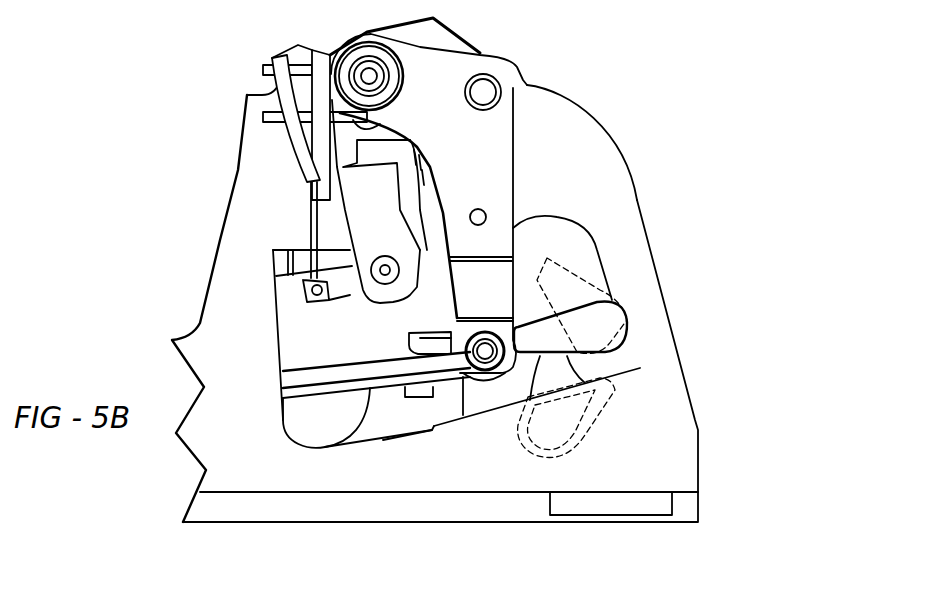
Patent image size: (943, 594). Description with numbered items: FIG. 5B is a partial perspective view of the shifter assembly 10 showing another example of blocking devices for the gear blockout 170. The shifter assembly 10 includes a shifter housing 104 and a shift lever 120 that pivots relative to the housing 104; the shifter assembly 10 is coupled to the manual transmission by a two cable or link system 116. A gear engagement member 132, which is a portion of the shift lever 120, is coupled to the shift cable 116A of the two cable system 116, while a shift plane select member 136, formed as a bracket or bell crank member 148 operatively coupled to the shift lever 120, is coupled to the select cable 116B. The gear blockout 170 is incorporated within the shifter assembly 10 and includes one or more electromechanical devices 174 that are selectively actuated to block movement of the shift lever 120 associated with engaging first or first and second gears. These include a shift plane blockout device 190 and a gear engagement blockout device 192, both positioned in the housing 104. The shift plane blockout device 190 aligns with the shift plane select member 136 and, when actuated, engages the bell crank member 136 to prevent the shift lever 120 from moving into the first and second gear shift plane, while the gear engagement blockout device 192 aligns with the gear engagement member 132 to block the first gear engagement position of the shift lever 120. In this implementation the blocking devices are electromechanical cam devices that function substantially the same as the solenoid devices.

The shifter assembly 10 is at (612, 62).
The shifter housing 104 is at (587, 115).
The bracket (bell crank) member 148 is at (497, 173).
The shift plane select member 136 is at (516, 282).
The electromechanical device 174 is at (588, 277).
The shift plane electromechanical blockout device 190 is at (547, 340).
The gear blockout 170 is at (655, 320).
The gear engagement electromechanical blockout device 192 is at (550, 385).
The shift lever 120 is at (440, 260).
The select cable 116B is at (322, 375).
The two cable or link system 116 is at (312, 408).
The shift cable 116A is at (370, 387).
The gear engagement member 132 is at (493, 404).